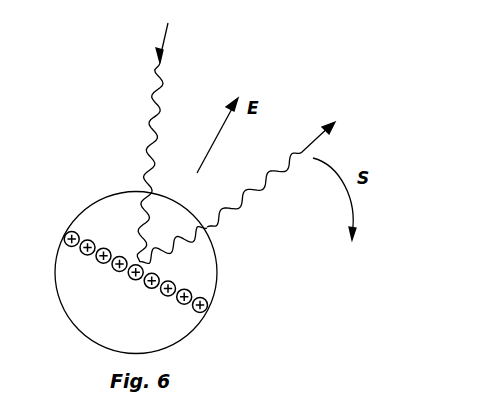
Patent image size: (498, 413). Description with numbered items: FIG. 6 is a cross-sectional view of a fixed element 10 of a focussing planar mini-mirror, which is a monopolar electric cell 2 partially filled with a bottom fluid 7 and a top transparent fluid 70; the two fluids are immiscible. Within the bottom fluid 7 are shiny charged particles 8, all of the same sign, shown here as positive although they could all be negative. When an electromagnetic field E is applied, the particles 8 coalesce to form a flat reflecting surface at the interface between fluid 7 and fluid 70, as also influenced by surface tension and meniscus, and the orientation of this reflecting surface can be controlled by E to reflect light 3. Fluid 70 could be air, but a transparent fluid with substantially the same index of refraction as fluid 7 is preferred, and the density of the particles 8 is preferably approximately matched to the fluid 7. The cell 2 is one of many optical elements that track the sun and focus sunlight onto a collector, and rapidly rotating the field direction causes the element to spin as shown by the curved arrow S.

The monopolar electric cell 2 is at (188, 266).
The light 3 is at (150, 99).
The bottom fluid 7 is at (167, 335).
The shiny charged particles 8 is at (108, 247).
The fixed element 10 is at (57, 344).
The top transparent fluid 70 is at (208, 275).